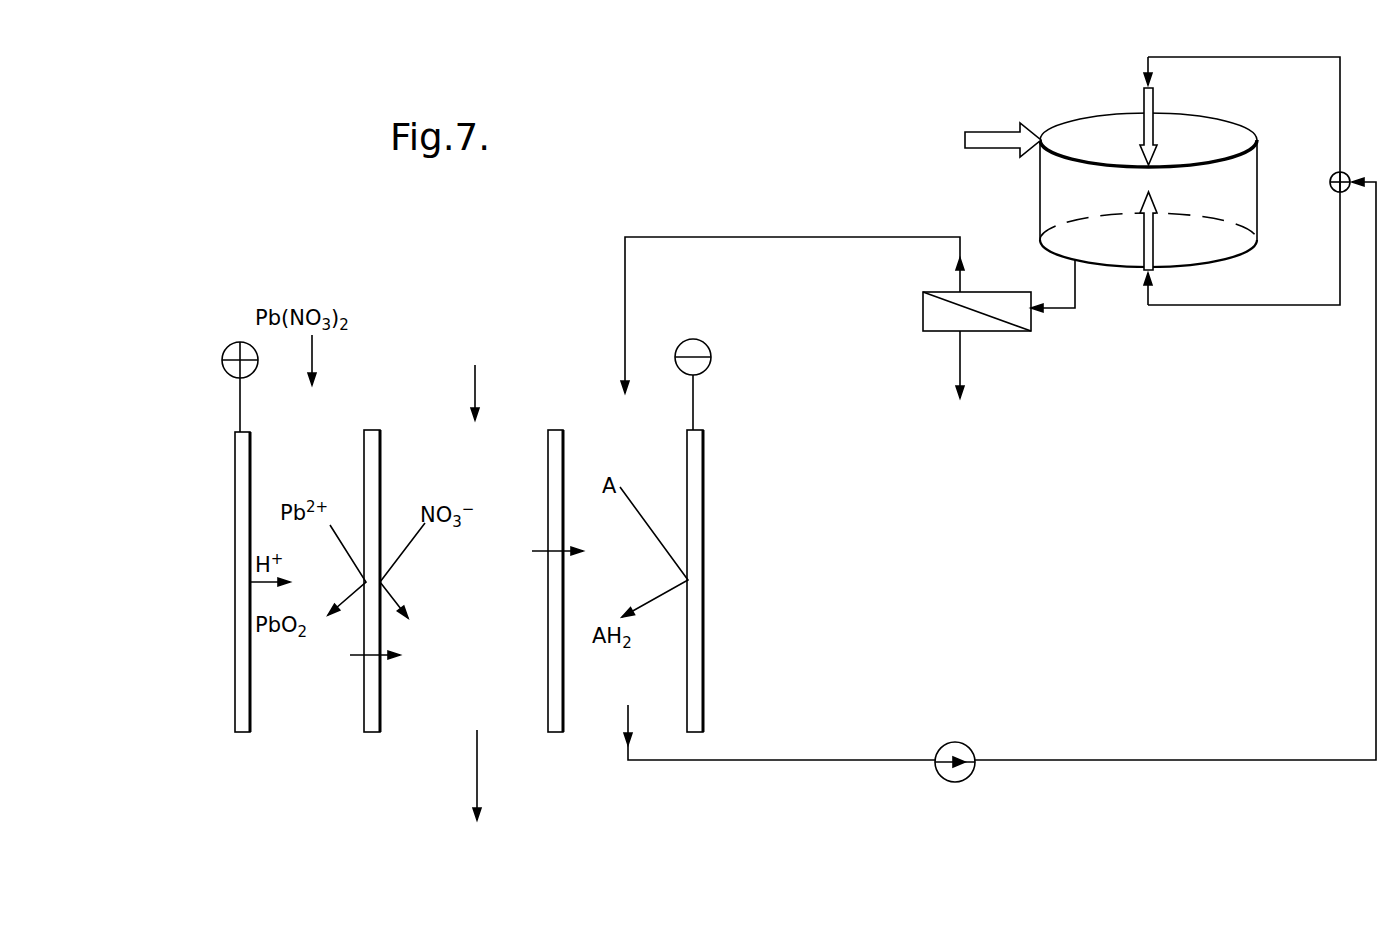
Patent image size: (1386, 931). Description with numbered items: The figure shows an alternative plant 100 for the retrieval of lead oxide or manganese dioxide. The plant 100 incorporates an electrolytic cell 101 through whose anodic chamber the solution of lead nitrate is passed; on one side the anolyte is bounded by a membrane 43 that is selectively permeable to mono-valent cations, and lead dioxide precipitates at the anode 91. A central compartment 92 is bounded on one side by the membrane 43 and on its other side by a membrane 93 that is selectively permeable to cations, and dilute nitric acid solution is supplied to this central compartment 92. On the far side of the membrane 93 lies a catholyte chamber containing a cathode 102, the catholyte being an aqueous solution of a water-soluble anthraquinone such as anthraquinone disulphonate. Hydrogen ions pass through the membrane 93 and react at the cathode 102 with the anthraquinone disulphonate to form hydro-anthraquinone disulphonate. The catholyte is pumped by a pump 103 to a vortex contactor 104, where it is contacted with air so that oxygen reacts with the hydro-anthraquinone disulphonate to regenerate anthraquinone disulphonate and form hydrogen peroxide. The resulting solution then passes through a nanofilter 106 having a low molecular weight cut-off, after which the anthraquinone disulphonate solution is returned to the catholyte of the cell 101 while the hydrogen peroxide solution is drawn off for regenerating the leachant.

The membrane 43 is at (370, 430).
The anode 91 is at (235, 466).
The central compartment 92 is at (486, 612).
The membrane 93 is at (557, 430).
The plant 100 is at (566, 270).
The electrolytic cell 101 is at (270, 760).
The cathode 102 is at (730, 675).
The pump 103 is at (947, 742).
The vortex contactor 104 is at (1066, 115).
The nanofilter 106 is at (1007, 331).